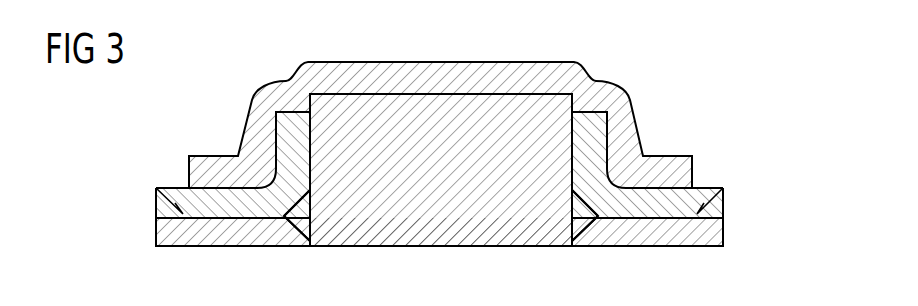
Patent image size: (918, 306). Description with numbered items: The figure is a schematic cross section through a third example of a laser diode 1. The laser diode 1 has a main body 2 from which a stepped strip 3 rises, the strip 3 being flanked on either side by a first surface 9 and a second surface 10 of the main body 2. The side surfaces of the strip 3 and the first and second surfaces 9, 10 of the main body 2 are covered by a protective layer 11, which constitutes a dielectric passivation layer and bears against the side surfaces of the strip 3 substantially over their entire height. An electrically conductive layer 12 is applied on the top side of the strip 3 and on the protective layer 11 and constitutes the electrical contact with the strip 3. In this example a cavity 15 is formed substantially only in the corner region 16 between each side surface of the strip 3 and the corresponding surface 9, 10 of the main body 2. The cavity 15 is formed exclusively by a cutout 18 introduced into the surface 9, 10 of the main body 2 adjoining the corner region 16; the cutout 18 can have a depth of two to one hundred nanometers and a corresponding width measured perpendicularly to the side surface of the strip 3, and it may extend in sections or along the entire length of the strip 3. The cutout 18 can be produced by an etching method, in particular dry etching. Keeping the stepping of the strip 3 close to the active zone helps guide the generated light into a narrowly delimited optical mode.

The laser diode 1 is at (776, 164).
The main body 2 is at (434, 221).
The strip 3 is at (432, 108).
The first surface of the main body 9 is at (723, 188).
The second surface of the main body 10 is at (157, 188).
The protective layer 11 is at (292, 130).
The electrically conductive layer 12 is at (280, 95).
The cavity 15 is at (293, 210).
The corner region 16 is at (312, 218).
The cutout 18 is at (304, 218).